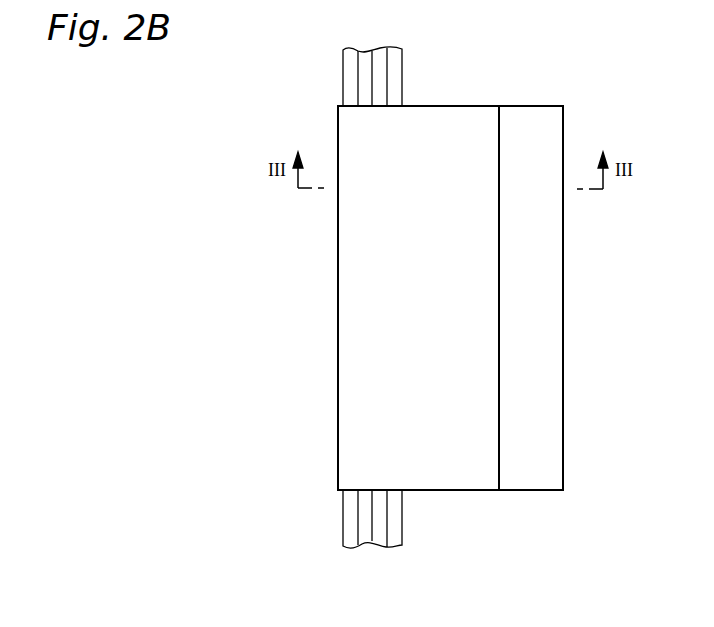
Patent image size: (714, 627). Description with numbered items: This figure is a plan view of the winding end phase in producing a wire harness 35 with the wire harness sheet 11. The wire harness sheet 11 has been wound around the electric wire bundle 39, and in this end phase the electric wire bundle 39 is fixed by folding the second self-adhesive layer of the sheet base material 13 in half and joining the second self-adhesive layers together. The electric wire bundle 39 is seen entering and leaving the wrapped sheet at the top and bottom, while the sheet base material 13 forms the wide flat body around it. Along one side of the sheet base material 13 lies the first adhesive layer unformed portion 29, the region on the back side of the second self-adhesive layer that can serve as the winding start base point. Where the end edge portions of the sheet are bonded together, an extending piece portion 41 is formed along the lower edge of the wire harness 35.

The wire harness sheet 11 is at (308, 393).
The sheet base material 13 is at (544, 106).
The first adhesive layer unformed portion 29 is at (538, 327).
The wire harness 35 is at (322, 78).
The electric wire bundle 39 is at (343, 527).
The extending piece portion 41 is at (493, 500).